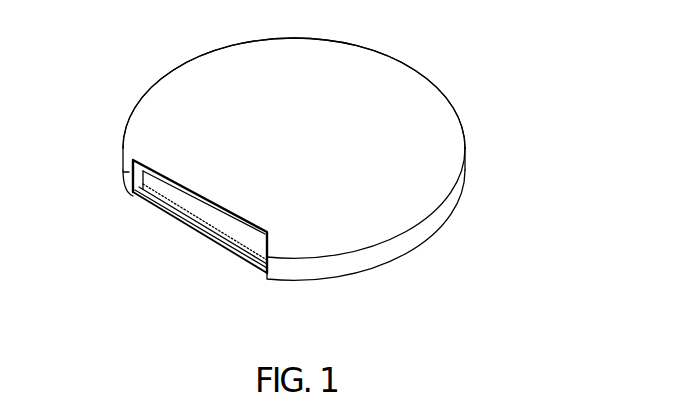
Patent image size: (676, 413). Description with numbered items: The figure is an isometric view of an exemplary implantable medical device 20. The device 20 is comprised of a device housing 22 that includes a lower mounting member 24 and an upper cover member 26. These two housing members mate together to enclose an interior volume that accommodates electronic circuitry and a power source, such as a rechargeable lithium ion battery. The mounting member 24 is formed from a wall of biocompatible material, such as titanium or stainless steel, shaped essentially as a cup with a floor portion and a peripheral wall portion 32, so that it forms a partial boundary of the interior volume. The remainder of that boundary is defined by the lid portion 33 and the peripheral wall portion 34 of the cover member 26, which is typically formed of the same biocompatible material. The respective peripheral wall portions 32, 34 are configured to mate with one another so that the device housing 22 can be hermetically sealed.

The implantable medical device 20 is at (285, 169).
The device housing 22 is at (462, 120).
The lower mounting member 24 is at (122, 185).
The upper cover member 26 is at (123, 148).
The peripheral wall portion 32 is at (310, 277).
The lid portion 33 is at (323, 173).
The peripheral wall portion 34 is at (347, 245).